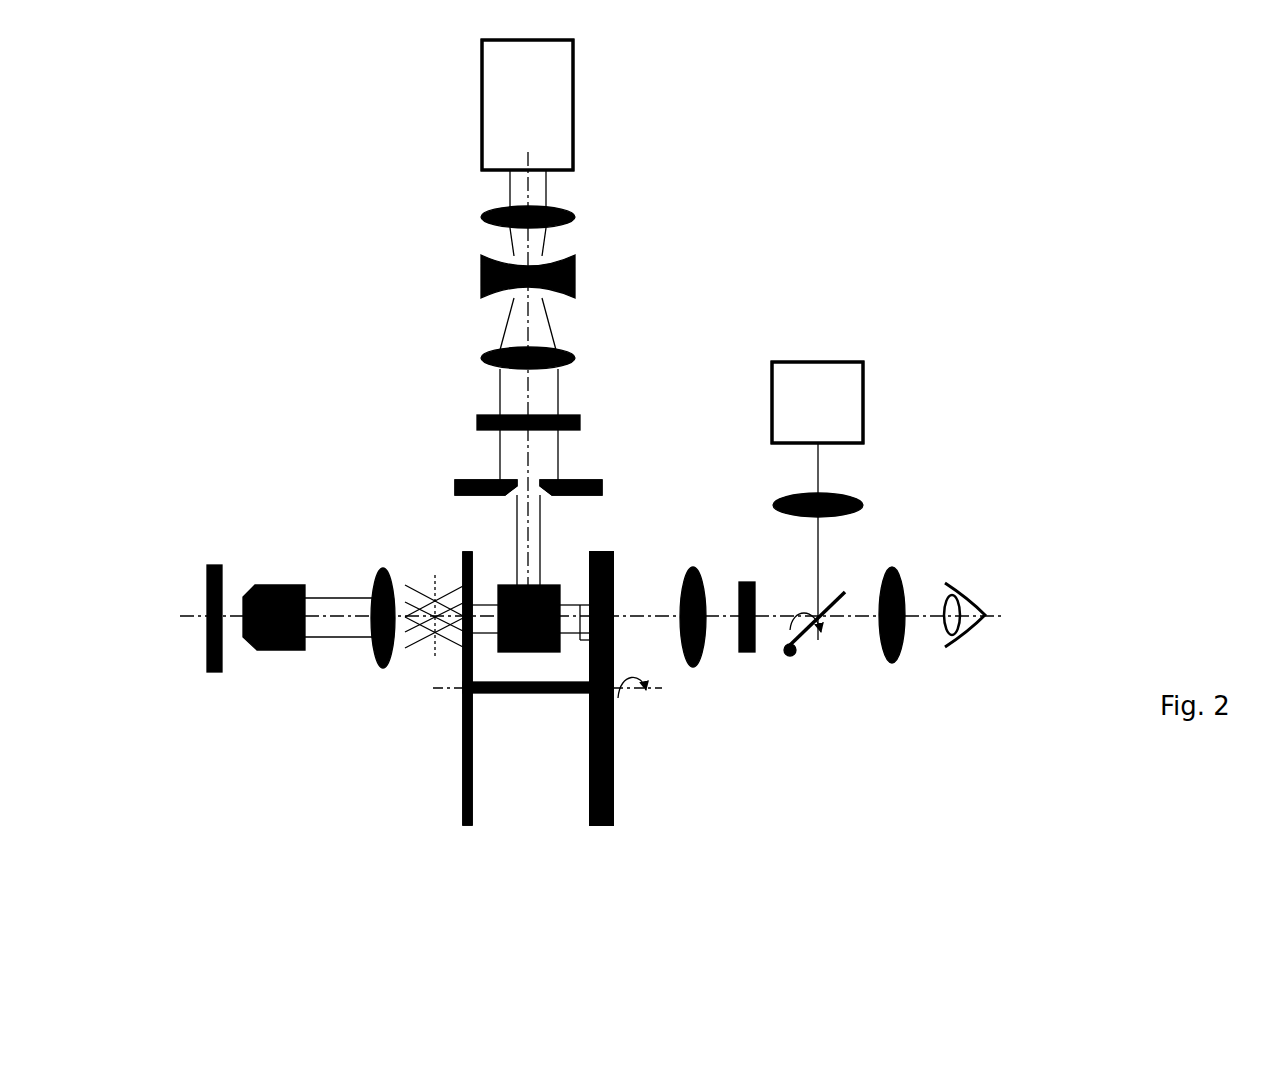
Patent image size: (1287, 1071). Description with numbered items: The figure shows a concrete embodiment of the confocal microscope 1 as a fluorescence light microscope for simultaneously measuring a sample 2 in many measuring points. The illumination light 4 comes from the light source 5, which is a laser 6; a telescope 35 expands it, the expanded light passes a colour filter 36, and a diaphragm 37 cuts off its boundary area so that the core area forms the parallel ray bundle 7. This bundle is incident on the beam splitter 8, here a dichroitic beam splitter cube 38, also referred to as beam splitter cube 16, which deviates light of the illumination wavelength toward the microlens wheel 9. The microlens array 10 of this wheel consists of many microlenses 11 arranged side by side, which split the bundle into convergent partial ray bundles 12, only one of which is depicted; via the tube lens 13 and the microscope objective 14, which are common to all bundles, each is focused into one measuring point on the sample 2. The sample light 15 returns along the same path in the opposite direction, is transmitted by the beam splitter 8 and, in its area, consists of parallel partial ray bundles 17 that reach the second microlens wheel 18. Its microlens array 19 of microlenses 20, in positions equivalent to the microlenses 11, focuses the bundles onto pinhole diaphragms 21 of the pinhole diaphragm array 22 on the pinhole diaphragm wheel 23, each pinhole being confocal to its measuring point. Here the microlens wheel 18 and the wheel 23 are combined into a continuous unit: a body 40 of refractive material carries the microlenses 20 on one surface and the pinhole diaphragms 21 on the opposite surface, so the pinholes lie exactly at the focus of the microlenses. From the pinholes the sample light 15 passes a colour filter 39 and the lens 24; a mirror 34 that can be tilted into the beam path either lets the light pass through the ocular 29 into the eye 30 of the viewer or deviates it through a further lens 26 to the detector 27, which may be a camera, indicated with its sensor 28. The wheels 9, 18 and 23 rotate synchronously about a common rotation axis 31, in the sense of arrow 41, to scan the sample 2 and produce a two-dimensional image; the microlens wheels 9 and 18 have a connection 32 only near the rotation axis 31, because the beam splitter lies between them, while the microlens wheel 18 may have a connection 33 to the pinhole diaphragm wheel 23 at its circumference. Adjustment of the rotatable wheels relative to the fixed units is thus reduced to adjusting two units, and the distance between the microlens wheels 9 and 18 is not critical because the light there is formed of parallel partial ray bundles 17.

The confocal microscope 1 is at (797, 192).
The sample 2 is at (215, 672).
The illumination light 4 is at (515, 507).
The light source 5 is at (575, 102).
The laser 6 is at (510, 103).
The parallel ray bundle 7 is at (540, 512).
The beam splitter 8 is at (505, 585).
The microlens wheel 9 is at (472, 820).
The microlens array 10 is at (458, 764).
The microlenses 11 is at (472, 764).
The convergent partial ray bundles 12 is at (440, 655).
The tube lens 13 is at (380, 668).
The microscope objective 14 is at (270, 650).
The sample light 15 is at (583, 585).
The beam splitter cube 16 is at (533, 652).
The parallel partial ray bundles 17 is at (613, 636).
The second microlens wheel 18 is at (590, 815).
The microlens array 19 is at (589, 772).
The microlenses 20 is at (590, 748).
The pinhole diaphragms 21 is at (613, 778).
The pinhole diaphragm array 22 is at (622, 750).
The pinhole diaphragm wheel 23 is at (613, 808).
The lens 24 is at (700, 565).
The further lens 26 is at (862, 497).
The detector 27 is at (865, 398).
The image sensor 28 is at (772, 392).
The ocular 29 is at (895, 658).
The eye 30 is at (957, 640).
The rotation axis 31 is at (437, 690).
The connection 32 is at (483, 695).
The connection 33 is at (613, 818).
The mirror 34 is at (805, 652).
The telescope 35 is at (596, 370).
The colour filter 36 is at (580, 422).
The diaphragm 37 is at (580, 485).
The dichroitic beam splitter cube 38 is at (567, 585).
The colour filter 39 is at (747, 652).
The body of refractive material 40 is at (613, 655).
The rotation direction 41 is at (660, 688).